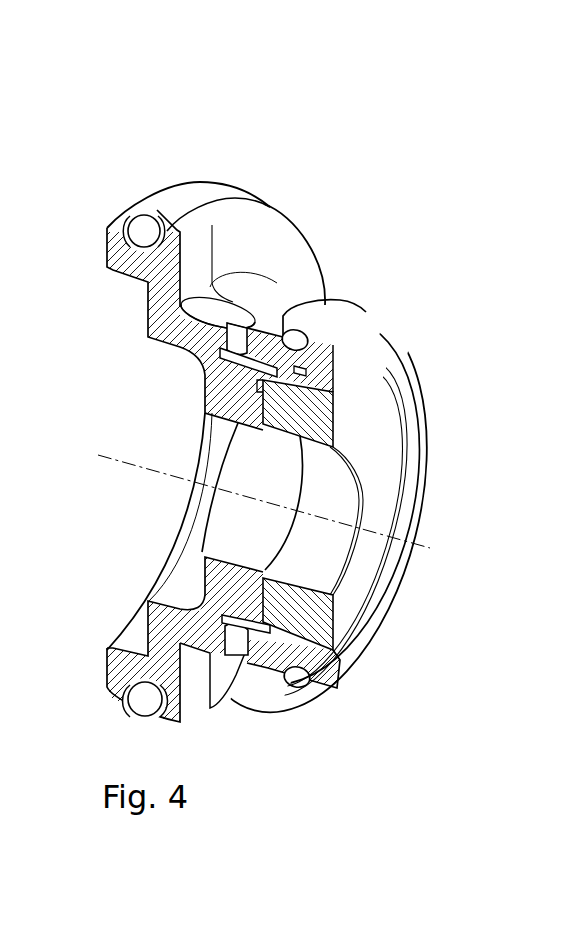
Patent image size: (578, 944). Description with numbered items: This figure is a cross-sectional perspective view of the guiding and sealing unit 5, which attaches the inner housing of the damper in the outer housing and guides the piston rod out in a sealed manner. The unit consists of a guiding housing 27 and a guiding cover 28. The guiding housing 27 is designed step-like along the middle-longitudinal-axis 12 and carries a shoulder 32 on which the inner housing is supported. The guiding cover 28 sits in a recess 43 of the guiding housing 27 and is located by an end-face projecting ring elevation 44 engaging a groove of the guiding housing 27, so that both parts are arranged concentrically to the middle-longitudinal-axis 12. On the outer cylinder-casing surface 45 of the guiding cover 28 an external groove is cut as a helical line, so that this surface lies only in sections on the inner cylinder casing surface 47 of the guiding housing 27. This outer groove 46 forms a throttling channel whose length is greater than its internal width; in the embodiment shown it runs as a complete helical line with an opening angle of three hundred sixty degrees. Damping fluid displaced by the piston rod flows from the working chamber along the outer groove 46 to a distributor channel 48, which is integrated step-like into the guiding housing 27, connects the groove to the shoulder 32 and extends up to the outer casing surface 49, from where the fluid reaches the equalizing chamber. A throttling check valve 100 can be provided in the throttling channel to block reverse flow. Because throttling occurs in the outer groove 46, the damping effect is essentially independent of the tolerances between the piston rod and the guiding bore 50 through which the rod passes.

The guiding and sealing unit 5 is at (346, 147).
The middle-longitudinal-axis 12 is at (395, 523).
The guiding housing 27 is at (269, 198).
The guiding cover 28 is at (397, 463).
The shoulder 32 is at (258, 225).
The recess 43 is at (398, 580).
The ring elevation 44 is at (350, 406).
The outer cylinder-casing surface 45 is at (315, 342).
The outer groove 46 is at (336, 400).
The inner cylinder casing surface 47 is at (367, 617).
The distributor channel 48 is at (237, 337).
The outer casing surface 49 is at (212, 205).
The guiding bore 50 is at (372, 510).
The throttling check valve 100 is at (322, 345).